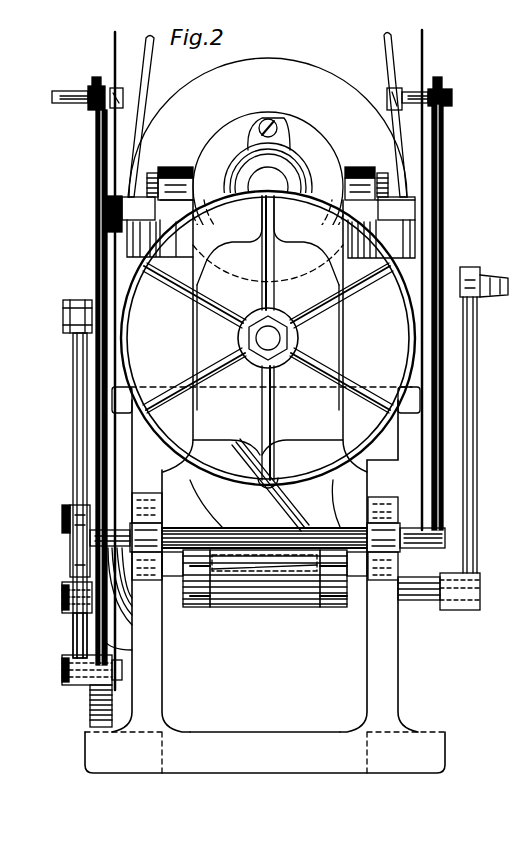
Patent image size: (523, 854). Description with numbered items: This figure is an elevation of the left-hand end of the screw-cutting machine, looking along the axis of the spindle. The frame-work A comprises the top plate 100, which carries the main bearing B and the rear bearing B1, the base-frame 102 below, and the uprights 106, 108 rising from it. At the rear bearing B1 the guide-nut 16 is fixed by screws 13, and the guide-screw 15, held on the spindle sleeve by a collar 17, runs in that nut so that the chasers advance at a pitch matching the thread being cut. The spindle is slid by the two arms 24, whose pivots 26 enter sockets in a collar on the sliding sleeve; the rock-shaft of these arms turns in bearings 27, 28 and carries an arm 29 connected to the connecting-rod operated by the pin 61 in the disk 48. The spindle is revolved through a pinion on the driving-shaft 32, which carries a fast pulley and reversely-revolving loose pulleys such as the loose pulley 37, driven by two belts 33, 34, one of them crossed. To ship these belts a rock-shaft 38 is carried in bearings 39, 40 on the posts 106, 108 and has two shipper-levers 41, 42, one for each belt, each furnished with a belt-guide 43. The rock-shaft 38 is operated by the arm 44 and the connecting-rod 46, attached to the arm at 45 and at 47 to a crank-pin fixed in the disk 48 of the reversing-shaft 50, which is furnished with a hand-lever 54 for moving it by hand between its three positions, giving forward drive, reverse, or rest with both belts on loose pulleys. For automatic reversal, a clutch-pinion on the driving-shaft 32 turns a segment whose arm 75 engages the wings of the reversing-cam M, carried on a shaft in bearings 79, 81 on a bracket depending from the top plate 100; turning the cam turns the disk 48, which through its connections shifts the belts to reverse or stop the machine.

The screws 13 is at (275, 124).
The guide-screw 15 is at (248, 158).
The guide-nut 16 is at (250, 140).
The collar 17 is at (240, 165).
The arms 24 is at (362, 167).
The pivots 26 is at (383, 174).
The bearing 27 is at (129, 214).
The bearing 28 is at (396, 208).
The arm 29 is at (96, 252).
The driving-shaft 32 is at (270, 340).
The belt 33 is at (426, 68).
The belt 34 is at (395, 58).
The loose pulley 37 is at (372, 434).
The rock-shaft 38 is at (265, 560).
The bearing 39 is at (146, 535).
The bearing 40 is at (383, 535).
The shipper-lever 41 is at (96, 163).
The shipper-lever 42 is at (444, 152).
The belt-guide 43 is at (386, 98).
The arm 44 is at (112, 645).
The attachment point 45 is at (122, 673).
The connecting-rod 46 is at (78, 633).
The attachment point 47 is at (62, 597).
The disk 48 is at (90, 705).
The reversing-shaft 50 is at (412, 606).
The hand-lever 54 is at (470, 475).
The pin 61 is at (66, 515).
The arm 75 is at (290, 510).
The bearing 79 is at (197, 580).
The bearing 81 is at (338, 600).
The top plate 100 is at (120, 400).
The base-frame 102 is at (265, 752).
The upright 106 is at (145, 694).
The upright 108 is at (385, 692).
The frame-work A is at (148, 610).
The main bearing B is at (330, 82).
The rear bearing B1 is at (325, 152).
The reversing-cam M is at (264, 593).